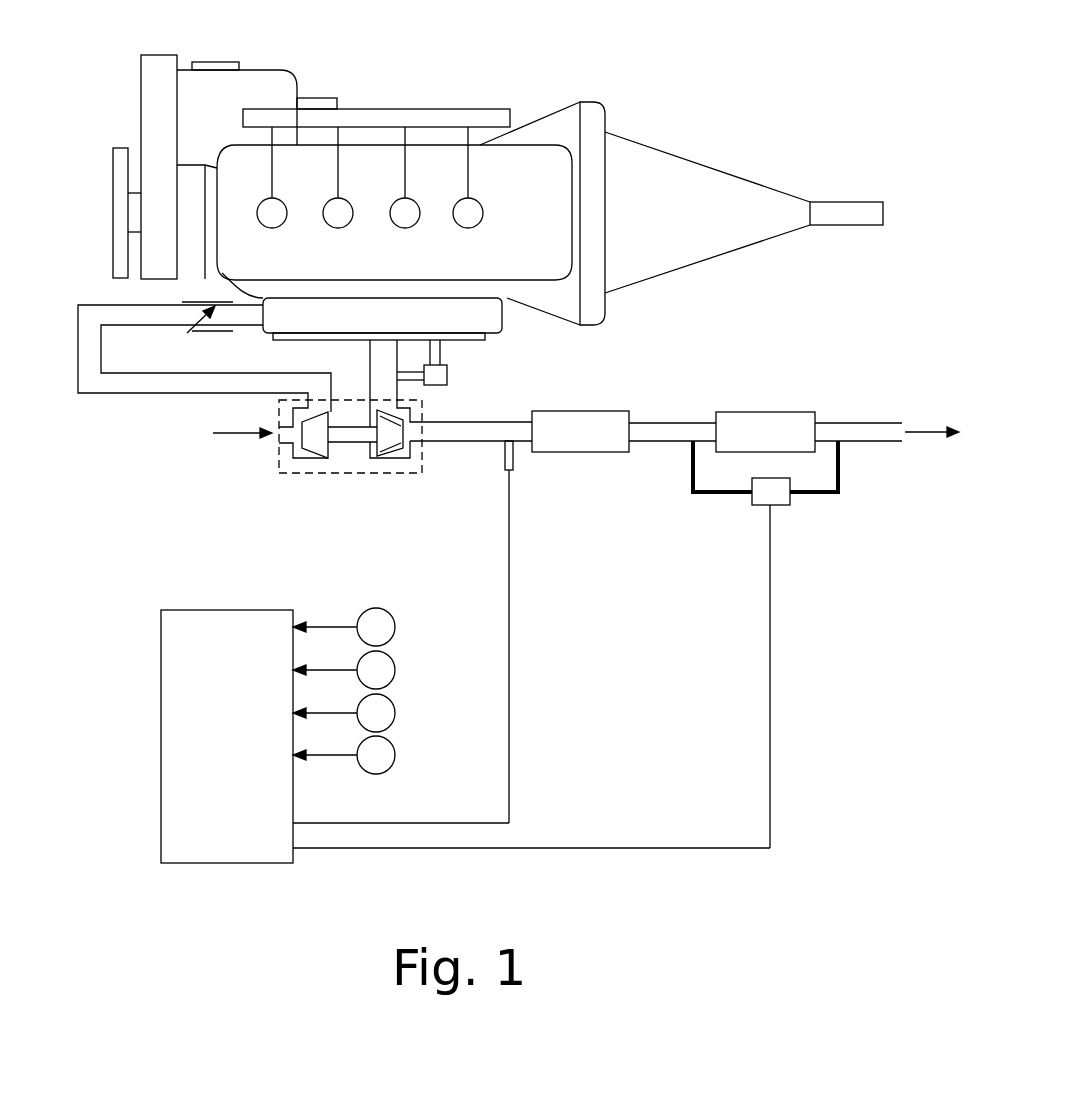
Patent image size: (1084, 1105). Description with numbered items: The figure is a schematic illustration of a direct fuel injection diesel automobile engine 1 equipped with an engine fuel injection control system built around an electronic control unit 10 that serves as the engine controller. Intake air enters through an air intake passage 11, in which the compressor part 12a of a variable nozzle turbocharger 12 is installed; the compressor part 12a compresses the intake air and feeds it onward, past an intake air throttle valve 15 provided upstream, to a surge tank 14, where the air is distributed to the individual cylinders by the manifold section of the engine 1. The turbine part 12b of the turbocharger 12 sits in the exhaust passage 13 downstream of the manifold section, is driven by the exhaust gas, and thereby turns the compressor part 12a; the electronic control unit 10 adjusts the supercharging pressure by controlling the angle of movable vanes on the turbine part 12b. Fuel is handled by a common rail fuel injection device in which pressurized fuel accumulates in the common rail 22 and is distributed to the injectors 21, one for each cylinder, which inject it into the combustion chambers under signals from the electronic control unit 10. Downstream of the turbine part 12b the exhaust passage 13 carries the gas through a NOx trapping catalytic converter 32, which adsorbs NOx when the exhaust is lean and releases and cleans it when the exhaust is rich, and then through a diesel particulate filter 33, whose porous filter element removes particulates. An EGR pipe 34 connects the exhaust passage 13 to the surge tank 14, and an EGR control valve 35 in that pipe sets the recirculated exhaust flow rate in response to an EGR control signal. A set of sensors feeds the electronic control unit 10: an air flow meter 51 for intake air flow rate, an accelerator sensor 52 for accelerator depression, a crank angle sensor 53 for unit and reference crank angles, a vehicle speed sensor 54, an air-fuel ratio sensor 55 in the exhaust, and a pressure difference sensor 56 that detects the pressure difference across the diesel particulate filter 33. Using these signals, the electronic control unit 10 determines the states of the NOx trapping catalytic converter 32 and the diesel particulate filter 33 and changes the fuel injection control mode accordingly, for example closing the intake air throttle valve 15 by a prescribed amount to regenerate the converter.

The diesel automobile engine 1 is at (548, 78).
The electronic control unit 10 is at (228, 610).
The air intake passage 11 is at (100, 305).
The variable nozzle turbocharger 12 is at (352, 473).
The compressor part 12a is at (313, 460).
The turbine part 12b is at (385, 458).
The exhaust passage 13 is at (370, 362).
The surge tank 14 is at (503, 318).
The intake air throttle valve 15 is at (187, 333).
The fuel injector 21 is at (282, 224).
The common rail 22 is at (437, 109).
The NOx trapping catalytic converter 32 is at (557, 411).
The diesel particulate filter 33 is at (752, 412).
The EGR pipe 34 is at (441, 349).
The EGR control valve 35 is at (447, 382).
The air flow meter 51 is at (395, 630).
The accelerator sensor 52 is at (395, 673).
The crank angle sensor 53 is at (395, 716).
The vehicle speed sensor 54 is at (395, 758).
The air-fuel ratio sensor 55 is at (514, 456).
The pressure difference sensor 56 is at (778, 506).